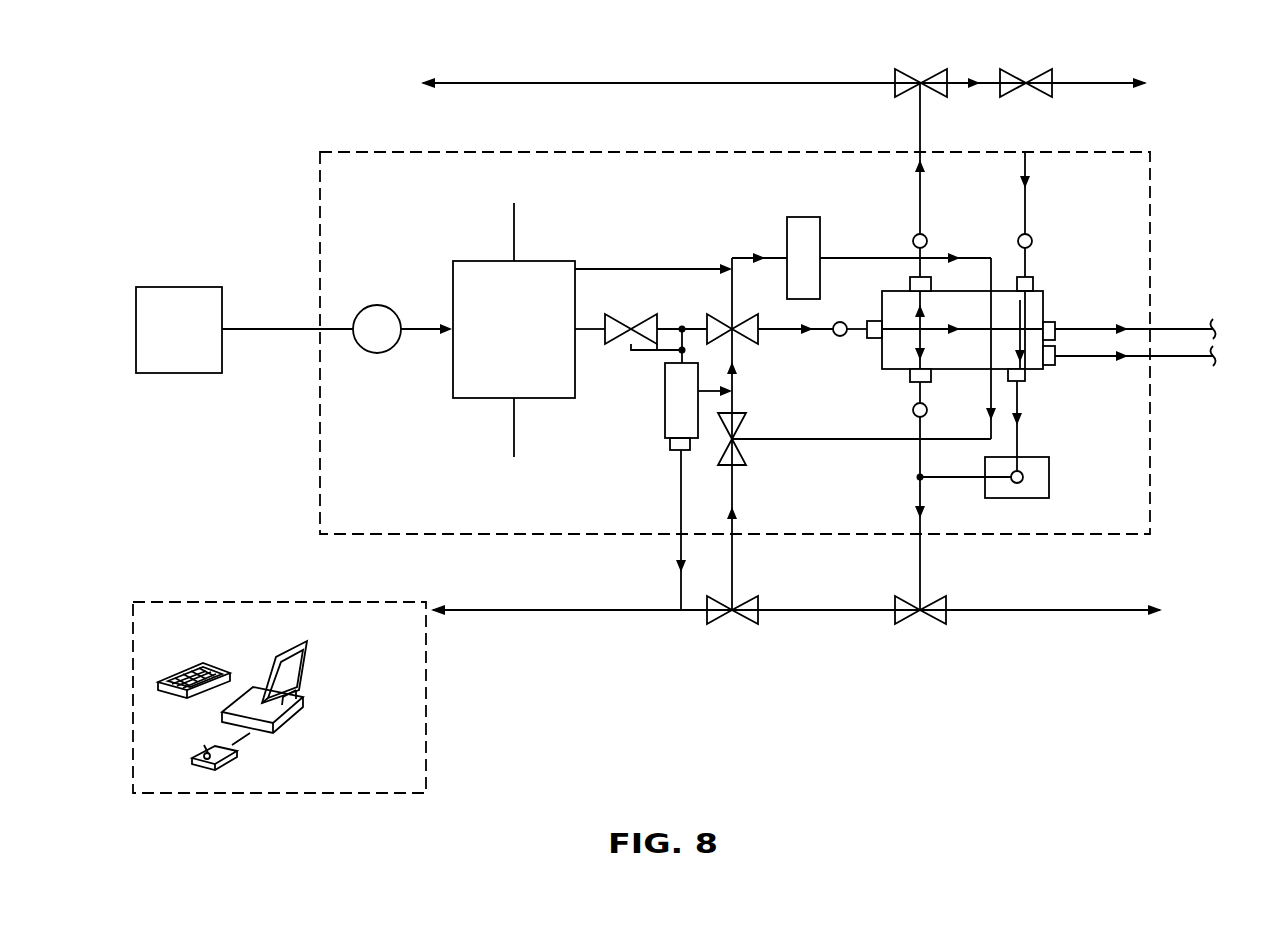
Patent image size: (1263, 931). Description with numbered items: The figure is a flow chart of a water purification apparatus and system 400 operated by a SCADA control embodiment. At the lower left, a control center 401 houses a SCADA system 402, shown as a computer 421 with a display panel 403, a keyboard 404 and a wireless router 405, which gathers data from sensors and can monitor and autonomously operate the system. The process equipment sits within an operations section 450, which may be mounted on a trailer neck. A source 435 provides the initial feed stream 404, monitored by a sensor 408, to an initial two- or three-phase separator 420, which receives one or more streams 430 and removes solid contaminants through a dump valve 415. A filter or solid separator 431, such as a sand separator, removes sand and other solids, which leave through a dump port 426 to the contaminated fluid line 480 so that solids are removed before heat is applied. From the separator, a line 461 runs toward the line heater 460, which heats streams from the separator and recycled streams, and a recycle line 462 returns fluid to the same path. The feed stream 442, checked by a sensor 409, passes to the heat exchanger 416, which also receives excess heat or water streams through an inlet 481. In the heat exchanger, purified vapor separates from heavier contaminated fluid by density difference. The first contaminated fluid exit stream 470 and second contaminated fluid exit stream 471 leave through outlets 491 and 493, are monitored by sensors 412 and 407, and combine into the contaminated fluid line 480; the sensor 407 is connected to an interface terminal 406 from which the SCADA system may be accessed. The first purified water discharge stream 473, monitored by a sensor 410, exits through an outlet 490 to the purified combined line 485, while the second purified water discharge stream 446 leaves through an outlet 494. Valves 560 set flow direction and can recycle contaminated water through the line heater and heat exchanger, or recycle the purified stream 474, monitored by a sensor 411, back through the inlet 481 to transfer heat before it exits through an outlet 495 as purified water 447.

The water purification apparatus and system 400 is at (248, 90).
The control center 401 is at (218, 601).
The SCADA system 402 is at (336, 684).
The display panel 403 is at (302, 667).
The keyboard / initial feed stream 404 is at (428, 332).
The wireless router 405 is at (228, 752).
The interface terminal 406 is at (1050, 478).
The sensor 407 is at (1016, 484).
The sensor 408 is at (375, 305).
The sensor 409 is at (842, 338).
The sensor 410 is at (932, 240).
The sensor 411 is at (1035, 240).
The sensor 412 is at (912, 411).
The dump valve 415 is at (622, 320).
The heat exchanger 416 is at (1045, 297).
The two- or three-phase separator 420 is at (575, 356).
The computer 421 is at (300, 712).
The dump port 426 is at (670, 447).
The streams 430 is at (513, 218).
The filter or solid separator 431 is at (665, 400).
The source 435 is at (178, 287).
The feed stream 442 is at (750, 338).
The second purified water discharge stream 446 is at (1175, 326).
The purified water 447 is at (1175, 360).
The operations section 450 is at (578, 152).
The line heater 460 is at (800, 217).
The bypass line 461 is at (668, 268).
The recycle line 462 is at (738, 400).
The first contaminated fluid exit stream 470 is at (918, 455).
The second contaminated fluid exit stream 471 is at (1020, 435).
The first purified water discharge stream 473 is at (917, 195).
The recycled first purified water flow stream 474 is at (1030, 195).
The contaminated fluid line 480 is at (560, 612).
The inlet 481 is at (870, 320).
The purified combined line 485 is at (660, 82).
The outlet 490 is at (932, 284).
The outlet 491 is at (908, 379).
The outlet 493 is at (1030, 381).
The outlet 494 is at (1056, 326).
The outlet 495 is at (1056, 362).
The valves 560 is at (718, 318).